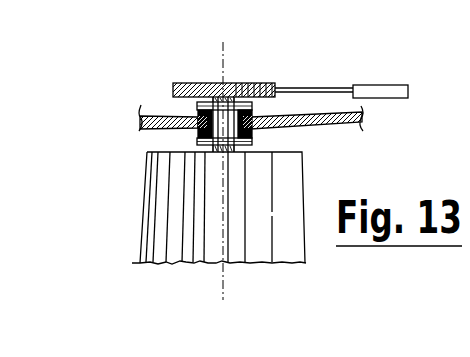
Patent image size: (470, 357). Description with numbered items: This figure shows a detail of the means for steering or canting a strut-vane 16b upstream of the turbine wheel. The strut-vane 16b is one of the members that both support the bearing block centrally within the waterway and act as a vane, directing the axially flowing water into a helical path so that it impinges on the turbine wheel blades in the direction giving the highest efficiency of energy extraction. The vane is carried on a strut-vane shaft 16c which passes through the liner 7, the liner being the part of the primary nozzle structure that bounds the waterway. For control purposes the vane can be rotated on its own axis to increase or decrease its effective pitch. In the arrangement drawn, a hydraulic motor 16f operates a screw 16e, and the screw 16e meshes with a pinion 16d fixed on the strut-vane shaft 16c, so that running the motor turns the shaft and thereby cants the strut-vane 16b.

The liner 7 is at (327, 128).
The strut-vane 16b is at (145, 194).
The strut-vane shaft 16c is at (250, 147).
The pinion 16d is at (173, 83).
The screw 16e is at (227, 84).
The hydraulic motor 16f is at (370, 85).